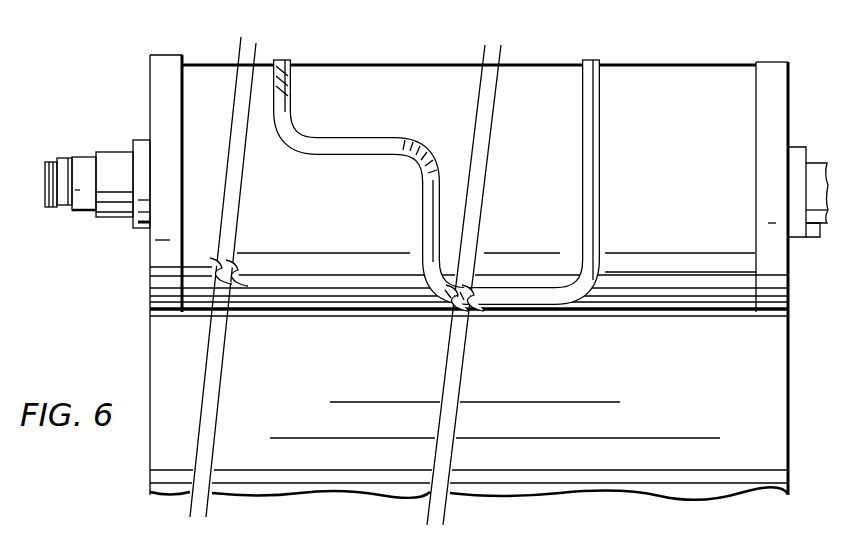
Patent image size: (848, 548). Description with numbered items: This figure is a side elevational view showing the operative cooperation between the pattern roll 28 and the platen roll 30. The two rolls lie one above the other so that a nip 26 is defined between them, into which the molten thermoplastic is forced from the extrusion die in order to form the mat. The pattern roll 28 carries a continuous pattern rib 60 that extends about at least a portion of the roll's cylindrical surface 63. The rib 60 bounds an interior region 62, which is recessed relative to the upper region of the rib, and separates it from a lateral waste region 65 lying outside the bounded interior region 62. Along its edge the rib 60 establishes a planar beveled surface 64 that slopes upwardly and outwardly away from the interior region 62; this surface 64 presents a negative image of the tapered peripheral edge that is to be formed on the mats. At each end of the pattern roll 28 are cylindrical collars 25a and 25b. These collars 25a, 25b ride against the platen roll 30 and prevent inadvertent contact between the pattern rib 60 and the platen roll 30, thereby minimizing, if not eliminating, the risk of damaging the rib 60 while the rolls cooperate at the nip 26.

The cylindrical collar 25a is at (163, 55).
The cylindrical collar 25b is at (783, 62).
The nip 26 is at (147, 297).
The pattern roll 28 is at (668, 66).
The platen roll 30 is at (574, 374).
The pattern rib 60 is at (589, 158).
The interior region 62 is at (412, 101).
The cylindrical surface 63 is at (745, 266).
The beveled surface 64 is at (291, 78).
The waste region 65 is at (295, 199).